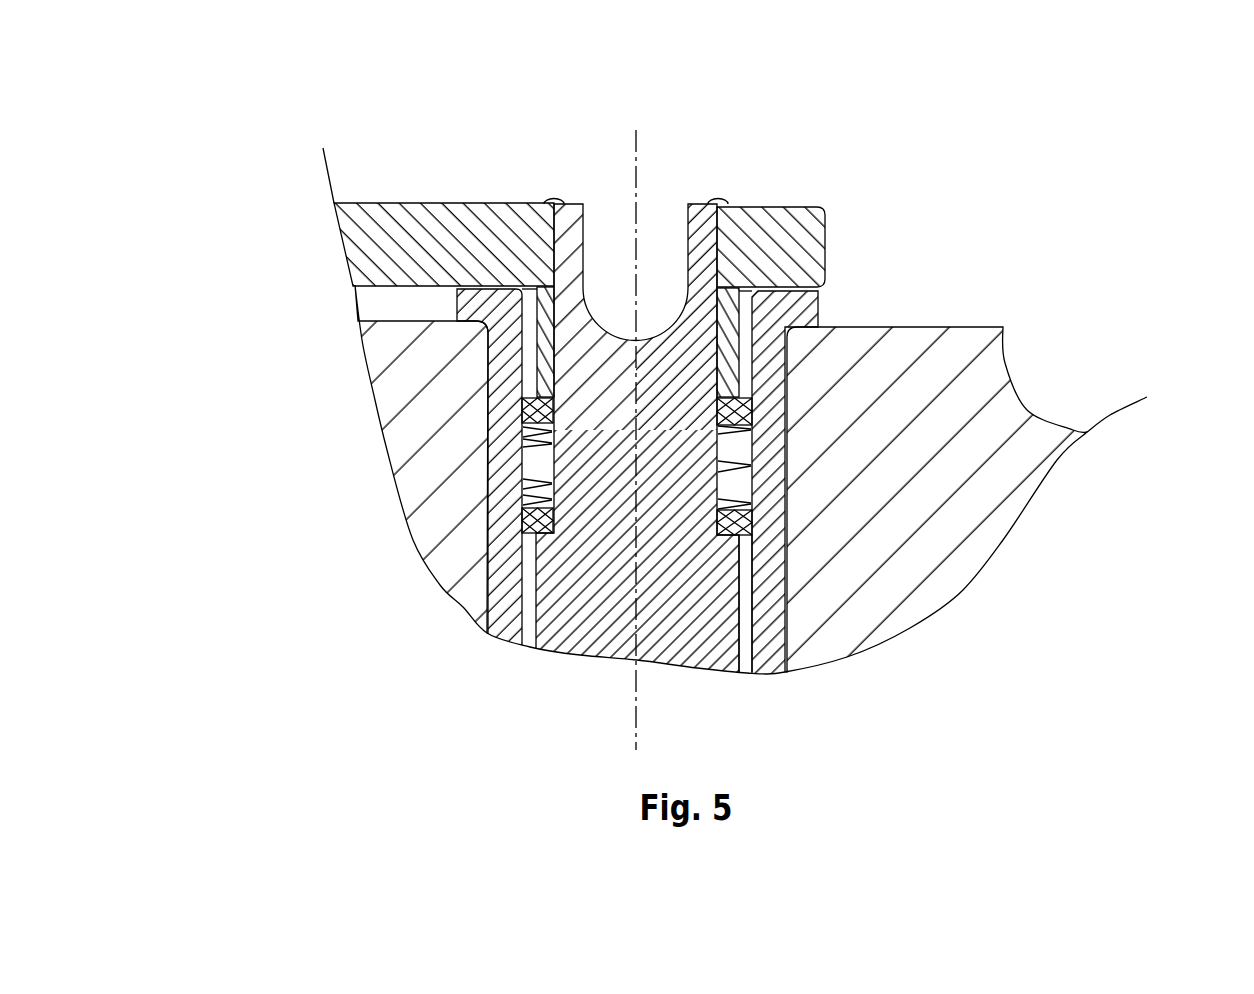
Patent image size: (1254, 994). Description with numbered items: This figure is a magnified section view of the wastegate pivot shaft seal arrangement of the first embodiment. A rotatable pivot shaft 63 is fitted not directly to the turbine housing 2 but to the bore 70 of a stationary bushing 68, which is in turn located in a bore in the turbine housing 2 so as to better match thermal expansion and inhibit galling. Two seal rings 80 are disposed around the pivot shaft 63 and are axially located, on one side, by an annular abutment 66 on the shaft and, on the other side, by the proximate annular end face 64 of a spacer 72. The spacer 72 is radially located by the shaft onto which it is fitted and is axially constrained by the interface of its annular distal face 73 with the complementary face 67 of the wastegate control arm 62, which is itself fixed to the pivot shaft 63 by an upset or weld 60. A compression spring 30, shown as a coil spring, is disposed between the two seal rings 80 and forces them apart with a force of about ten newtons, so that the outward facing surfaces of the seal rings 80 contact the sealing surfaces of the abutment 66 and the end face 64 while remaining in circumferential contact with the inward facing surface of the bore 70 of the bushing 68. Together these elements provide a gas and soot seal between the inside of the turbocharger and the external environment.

The turbine housing 2 is at (440, 477).
The compression spring 30 is at (535, 443).
The weld 60 is at (719, 202).
The wastegate control arm 62 is at (767, 242).
The pivot shaft 63 is at (613, 592).
The annular end face 64 is at (530, 390).
The annular abutment 66 is at (542, 302).
The complementary face 67 is at (542, 283).
The bushing 68 is at (767, 539).
The bore 70 is at (753, 562).
The spacer 72 is at (725, 353).
The annular distal face 73 is at (750, 673).
The seal rings 80 is at (752, 520).